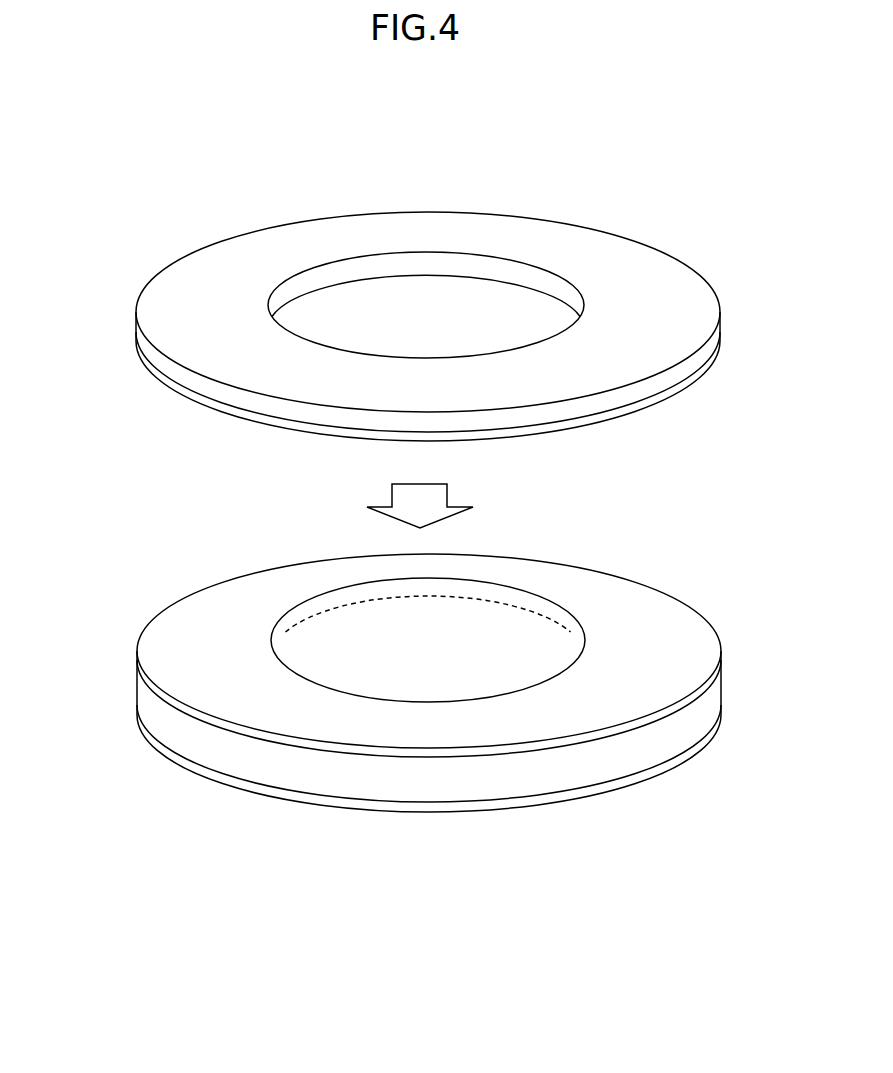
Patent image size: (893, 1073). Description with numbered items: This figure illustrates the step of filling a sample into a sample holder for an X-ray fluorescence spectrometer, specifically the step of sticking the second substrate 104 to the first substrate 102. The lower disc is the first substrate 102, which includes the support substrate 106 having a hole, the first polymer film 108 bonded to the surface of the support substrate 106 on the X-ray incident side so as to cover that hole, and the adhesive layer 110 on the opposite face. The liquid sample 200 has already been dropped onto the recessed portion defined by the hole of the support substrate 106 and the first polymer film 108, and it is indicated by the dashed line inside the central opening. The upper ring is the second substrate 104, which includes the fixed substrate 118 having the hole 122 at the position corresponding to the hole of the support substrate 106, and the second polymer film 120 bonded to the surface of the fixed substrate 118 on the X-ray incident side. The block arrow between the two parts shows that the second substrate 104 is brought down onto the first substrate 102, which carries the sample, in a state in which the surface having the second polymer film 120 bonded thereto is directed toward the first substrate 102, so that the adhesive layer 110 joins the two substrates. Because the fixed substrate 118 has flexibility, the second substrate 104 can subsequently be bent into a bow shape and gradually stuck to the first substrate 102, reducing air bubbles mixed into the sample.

The first substrate 102 is at (398, 707).
The second substrate 104 is at (396, 283).
The support substrate 106 is at (148, 700).
The first polymer film 108 is at (152, 746).
The adhesive layer 110 is at (150, 647).
The fixed substrate 118 is at (140, 344).
The second polymer film 120 is at (177, 392).
The hole 122 is at (474, 298).
The liquid sample 200 is at (485, 578).